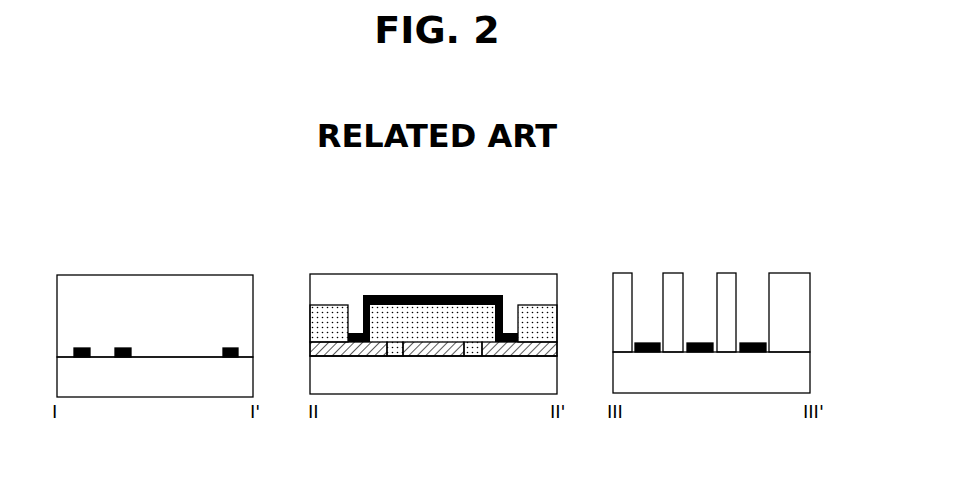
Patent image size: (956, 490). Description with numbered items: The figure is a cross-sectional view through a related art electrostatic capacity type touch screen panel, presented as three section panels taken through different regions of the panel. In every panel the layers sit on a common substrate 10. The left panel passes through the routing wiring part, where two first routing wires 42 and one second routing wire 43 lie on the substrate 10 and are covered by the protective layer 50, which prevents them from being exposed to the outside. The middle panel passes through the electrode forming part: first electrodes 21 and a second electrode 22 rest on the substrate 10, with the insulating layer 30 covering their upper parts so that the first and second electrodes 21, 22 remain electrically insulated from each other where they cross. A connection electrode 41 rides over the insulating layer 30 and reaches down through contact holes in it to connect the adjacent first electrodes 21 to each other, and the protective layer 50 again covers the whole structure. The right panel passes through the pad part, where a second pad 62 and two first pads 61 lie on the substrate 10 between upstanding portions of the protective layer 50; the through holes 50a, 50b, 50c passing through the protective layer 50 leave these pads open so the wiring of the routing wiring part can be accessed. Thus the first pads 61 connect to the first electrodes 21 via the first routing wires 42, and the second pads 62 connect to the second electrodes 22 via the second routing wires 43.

The substrate 10 is at (181, 380).
The first electrode 21 is at (360, 357).
The second electrode 22 is at (430, 357).
The insulating layer 30 is at (462, 323).
The connection electrode 41 is at (405, 295).
The first routing wire 42 is at (82, 357).
The second routing wire 43 is at (231, 357).
The protective layer 50 is at (171, 288).
The through hole 50a is at (645, 283).
The through hole 50b is at (697, 283).
The through hole 50c is at (748, 283).
The first pad 61 is at (700, 353).
The second pad 62 is at (648, 353).